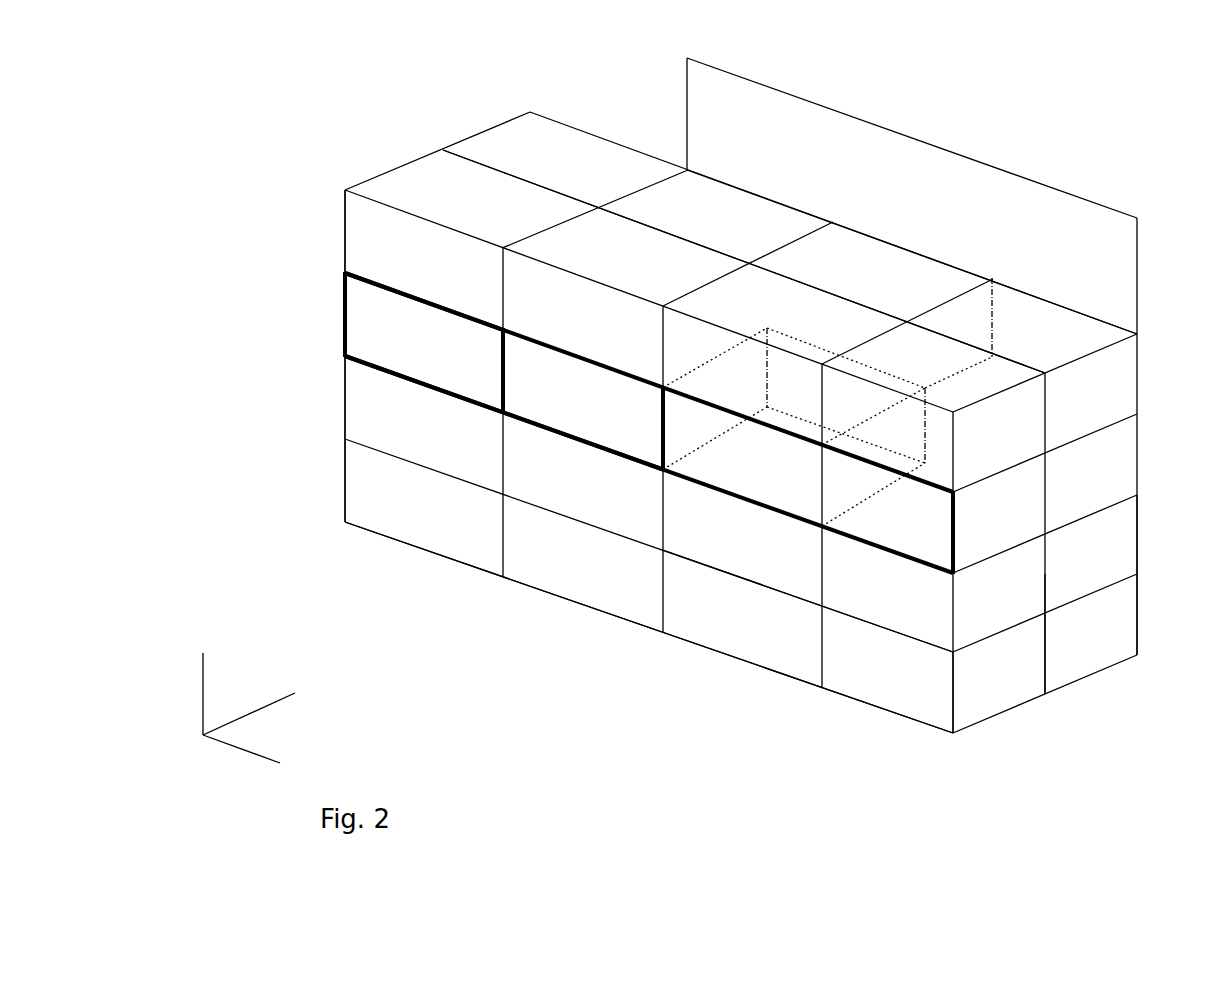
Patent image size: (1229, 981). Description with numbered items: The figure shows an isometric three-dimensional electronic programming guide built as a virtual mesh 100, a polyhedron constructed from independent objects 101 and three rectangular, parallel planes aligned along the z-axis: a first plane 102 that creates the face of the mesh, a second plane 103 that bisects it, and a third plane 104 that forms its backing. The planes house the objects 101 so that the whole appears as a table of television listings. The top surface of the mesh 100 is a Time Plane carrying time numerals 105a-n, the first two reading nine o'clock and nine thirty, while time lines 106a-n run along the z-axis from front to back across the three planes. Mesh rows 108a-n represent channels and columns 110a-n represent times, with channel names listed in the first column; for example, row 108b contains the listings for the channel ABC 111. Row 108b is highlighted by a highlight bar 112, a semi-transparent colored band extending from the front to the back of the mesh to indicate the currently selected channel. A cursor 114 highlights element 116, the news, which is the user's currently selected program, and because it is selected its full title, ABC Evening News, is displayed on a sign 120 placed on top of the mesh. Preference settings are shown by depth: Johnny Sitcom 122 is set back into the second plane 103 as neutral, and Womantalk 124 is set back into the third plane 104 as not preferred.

The virtual mesh 100 is at (245, 116).
The independent objects 101 is at (745, 555).
The first plane 102 is at (953, 697).
The second plane 103 is at (1045, 650).
The third plane 104 is at (1137, 590).
The time numerals 105a-n is at (786, 323).
The time lines 106a-n is at (940, 303).
The mesh rows 108a-n is at (320, 190).
The row 108b is at (343, 307).
The columns 110a-n is at (947, 767).
The channel ABC 111 is at (412, 362).
The highlight bar 112 is at (370, 365).
The cursor 114 is at (595, 448).
The news element 116 is at (557, 410).
The sign 120 is at (843, 140).
The Johnny Sitcom 122 is at (900, 438).
The Womantalk 124 is at (1110, 383).